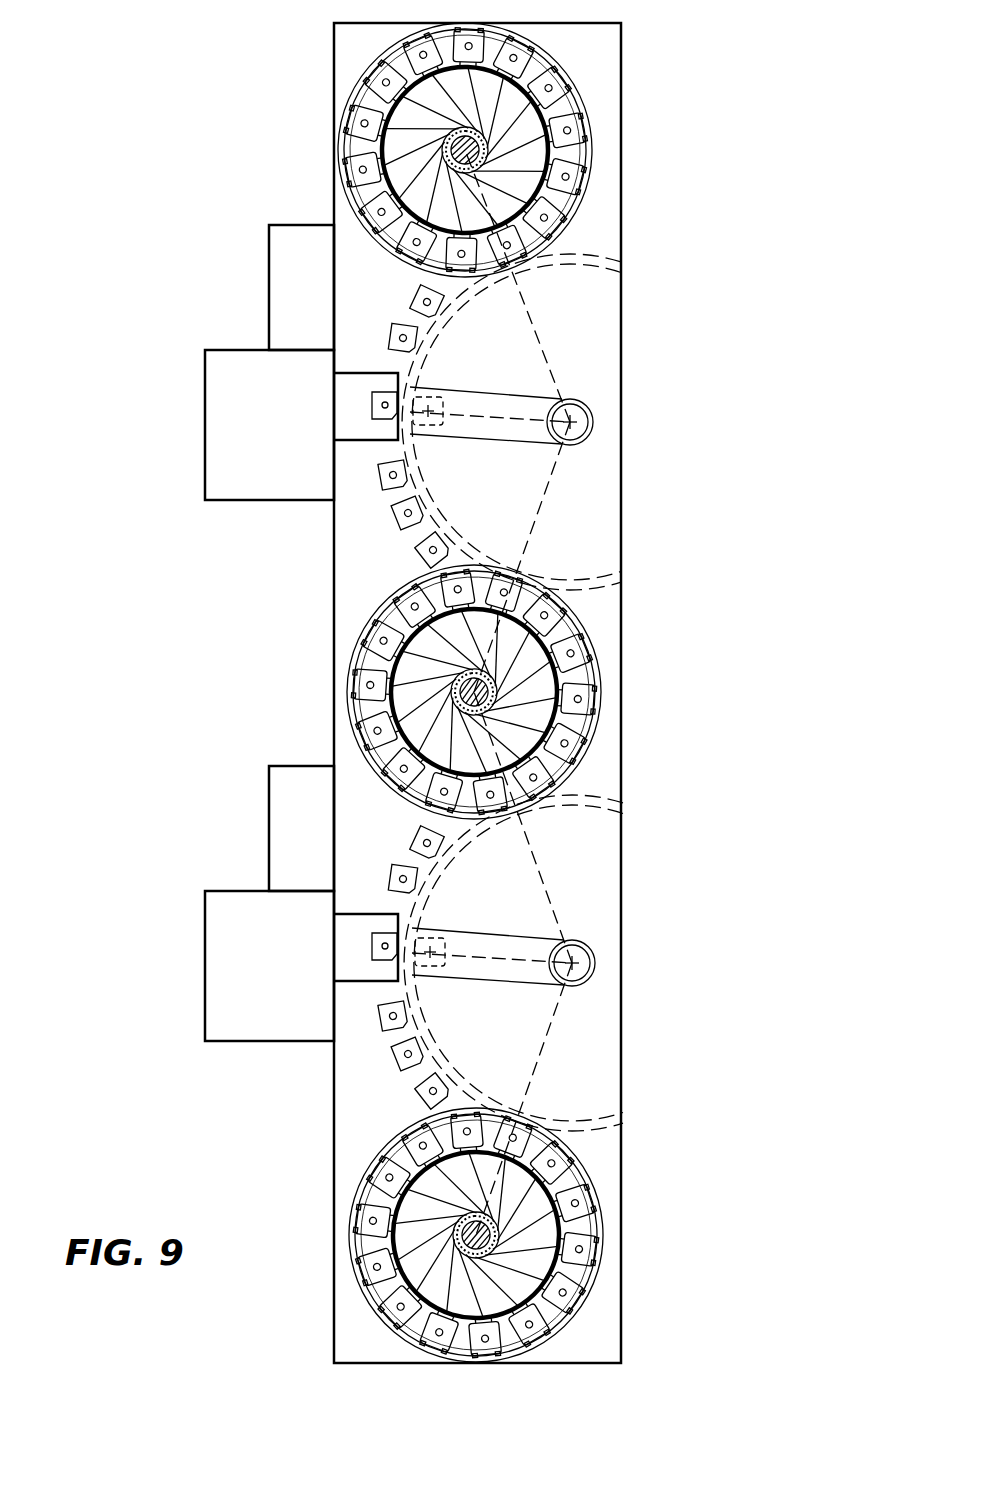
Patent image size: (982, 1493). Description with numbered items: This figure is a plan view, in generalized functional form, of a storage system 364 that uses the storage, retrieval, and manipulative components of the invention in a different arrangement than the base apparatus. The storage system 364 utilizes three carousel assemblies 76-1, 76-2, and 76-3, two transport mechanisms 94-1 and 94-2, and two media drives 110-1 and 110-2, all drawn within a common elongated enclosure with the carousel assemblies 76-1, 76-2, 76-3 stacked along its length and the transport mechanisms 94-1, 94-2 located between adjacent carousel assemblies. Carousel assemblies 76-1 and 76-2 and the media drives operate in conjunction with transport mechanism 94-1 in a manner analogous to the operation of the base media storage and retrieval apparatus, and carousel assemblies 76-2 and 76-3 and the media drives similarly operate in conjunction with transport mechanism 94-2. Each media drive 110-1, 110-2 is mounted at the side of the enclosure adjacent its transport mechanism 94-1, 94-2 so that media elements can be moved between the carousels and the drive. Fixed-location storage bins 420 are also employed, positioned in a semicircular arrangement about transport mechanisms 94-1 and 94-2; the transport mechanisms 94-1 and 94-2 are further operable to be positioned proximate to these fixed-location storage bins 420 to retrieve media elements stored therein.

The storage system 364 is at (94, 1044).
The carousel assembly 76-1 is at (350, 1212).
The carousel assembly 76-2 is at (362, 667).
The carousel assembly 76-3 is at (345, 120).
The transport mechanism 94-1 is at (592, 950).
The transport mechanism 94-2 is at (594, 417).
The media drive 110-1 is at (387, 948).
The media drive 110-2 is at (385, 405).
The fixed-location storage bins 420 is at (393, 336).